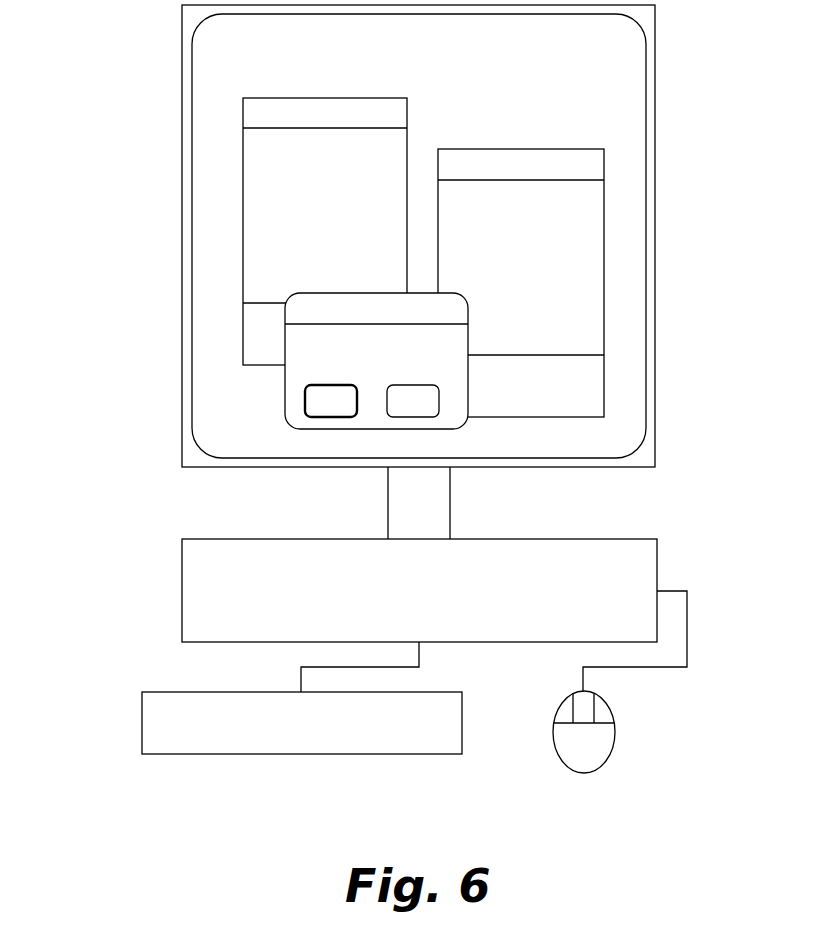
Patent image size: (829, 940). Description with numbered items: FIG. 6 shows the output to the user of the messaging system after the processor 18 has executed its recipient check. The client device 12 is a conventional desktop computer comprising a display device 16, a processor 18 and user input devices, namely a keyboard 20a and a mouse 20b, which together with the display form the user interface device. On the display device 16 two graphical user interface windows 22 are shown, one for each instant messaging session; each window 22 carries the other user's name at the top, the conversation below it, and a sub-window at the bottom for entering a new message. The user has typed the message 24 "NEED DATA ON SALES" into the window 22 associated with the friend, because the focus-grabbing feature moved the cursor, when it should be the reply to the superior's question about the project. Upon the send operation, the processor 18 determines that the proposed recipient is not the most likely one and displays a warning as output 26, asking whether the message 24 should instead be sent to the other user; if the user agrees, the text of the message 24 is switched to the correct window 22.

The client device 12 is at (143, 437).
The display device 16 is at (655, 170).
The processor 18 is at (657, 552).
The keyboard 20a is at (142, 734).
The mouse 20b is at (615, 745).
The graphical user interface window 22 is at (407, 118).
The message 24 is at (573, 396).
The output 26 is at (469, 335).